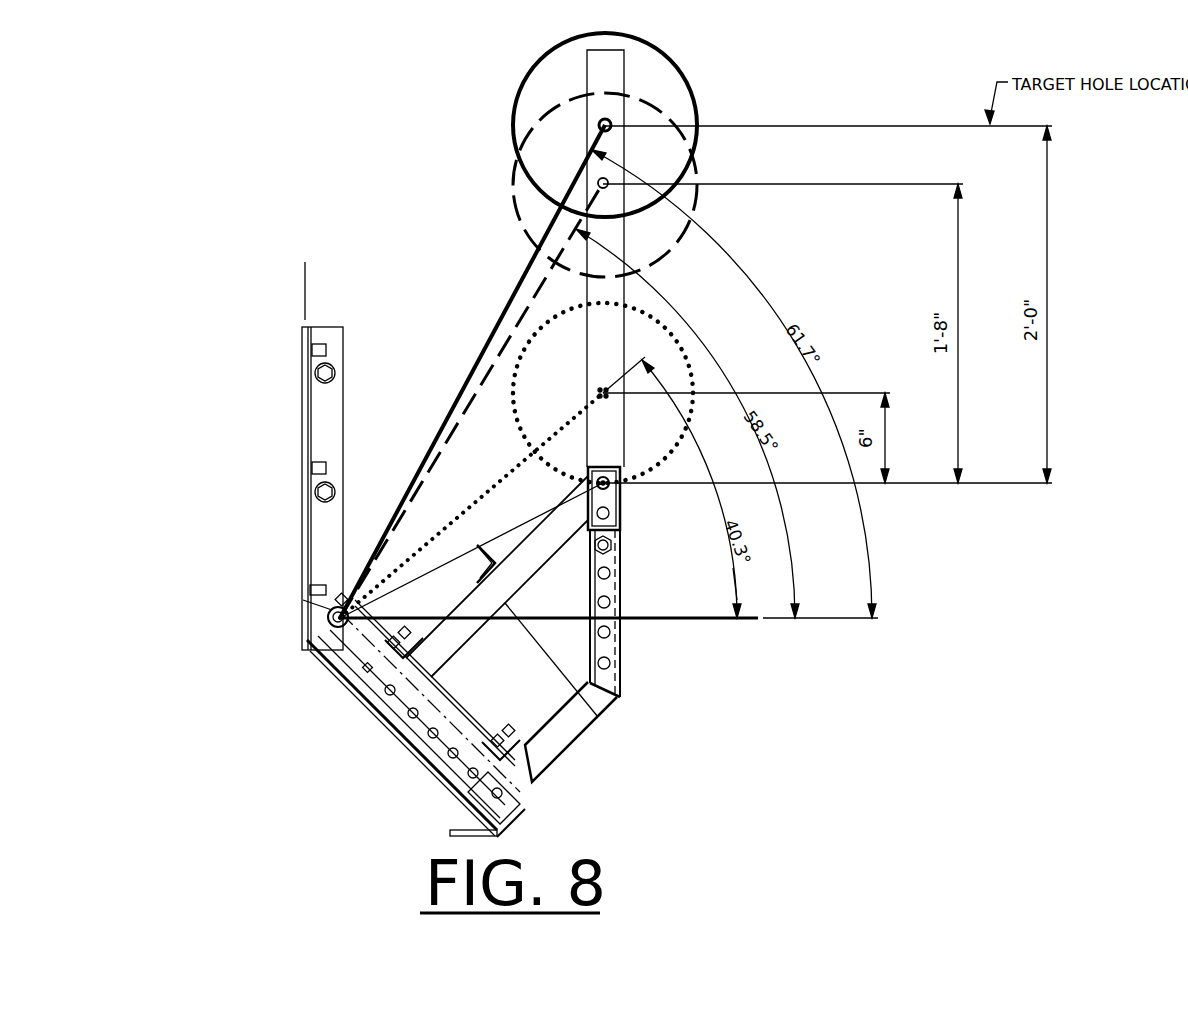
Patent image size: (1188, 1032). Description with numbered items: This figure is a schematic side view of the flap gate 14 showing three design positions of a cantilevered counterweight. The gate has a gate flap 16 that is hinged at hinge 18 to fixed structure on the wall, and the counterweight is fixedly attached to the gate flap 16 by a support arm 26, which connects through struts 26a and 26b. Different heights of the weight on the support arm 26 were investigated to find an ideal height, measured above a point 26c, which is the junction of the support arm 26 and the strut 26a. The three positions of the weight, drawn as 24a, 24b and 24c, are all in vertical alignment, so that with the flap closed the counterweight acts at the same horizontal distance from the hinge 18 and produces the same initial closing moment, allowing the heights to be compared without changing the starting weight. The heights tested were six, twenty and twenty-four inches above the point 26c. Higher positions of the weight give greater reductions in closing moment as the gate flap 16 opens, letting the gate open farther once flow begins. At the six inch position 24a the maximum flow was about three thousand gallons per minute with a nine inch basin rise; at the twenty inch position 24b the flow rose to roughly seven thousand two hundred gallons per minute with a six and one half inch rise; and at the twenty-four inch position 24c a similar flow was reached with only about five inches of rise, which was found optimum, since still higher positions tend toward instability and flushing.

The flap gate 14 is at (340, 775).
The gate flap 16 is at (522, 643).
The hinge 18 is at (333, 618).
The counterweight position 24a is at (612, 419).
The counterweight position 24b is at (614, 351).
The counterweight position 24c is at (692, 87).
The support arm 26 is at (686, 657).
The strut 26a is at (650, 775).
The strut 26b is at (698, 759).
The point 26c is at (694, 579).